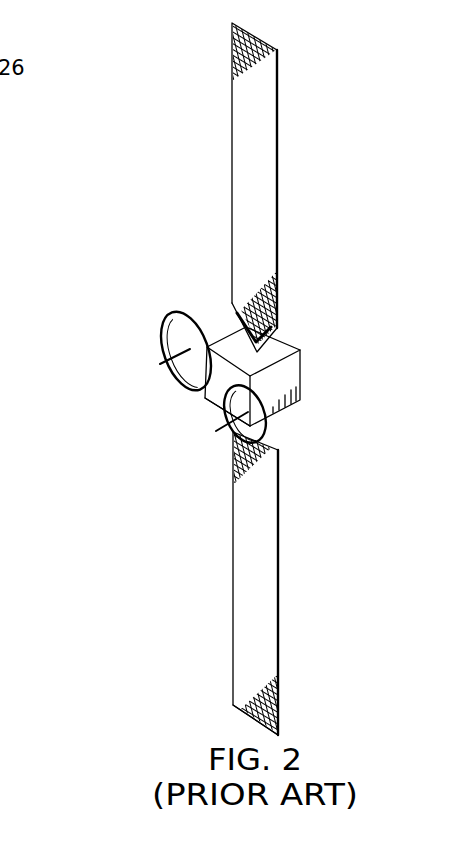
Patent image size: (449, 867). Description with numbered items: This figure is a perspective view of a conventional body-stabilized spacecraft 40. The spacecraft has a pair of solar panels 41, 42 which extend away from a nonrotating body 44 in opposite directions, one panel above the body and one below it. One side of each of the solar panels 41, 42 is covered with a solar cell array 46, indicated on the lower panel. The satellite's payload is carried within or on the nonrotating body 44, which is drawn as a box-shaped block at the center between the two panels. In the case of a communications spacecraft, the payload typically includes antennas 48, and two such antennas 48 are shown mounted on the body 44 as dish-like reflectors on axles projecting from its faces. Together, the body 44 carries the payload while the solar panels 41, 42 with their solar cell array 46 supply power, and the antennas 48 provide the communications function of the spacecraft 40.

The body-stabilized spacecraft 40 is at (153, 507).
The solar panel 41 is at (232, 203).
The solar panel 42 is at (232, 650).
The nonrotating body 44 is at (307, 393).
The solar cell array 46 is at (257, 698).
The antennas 48 is at (194, 380).